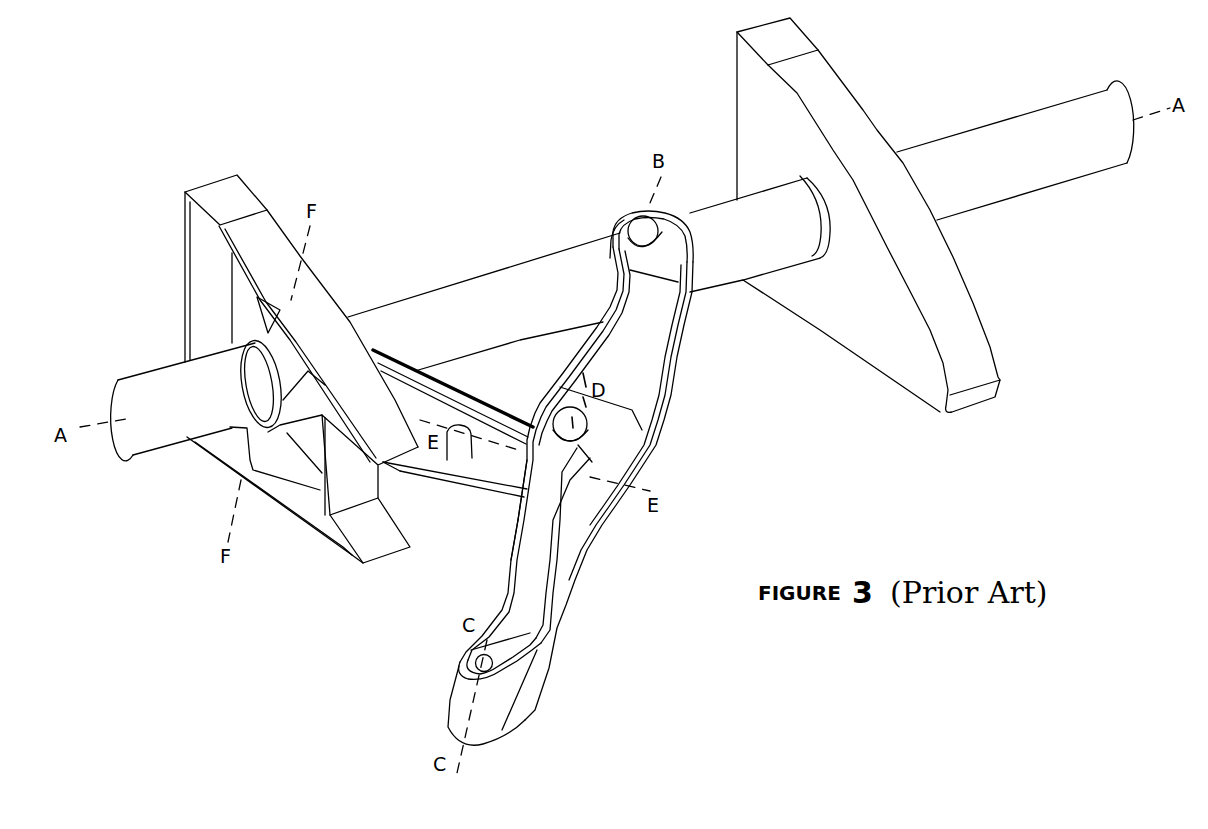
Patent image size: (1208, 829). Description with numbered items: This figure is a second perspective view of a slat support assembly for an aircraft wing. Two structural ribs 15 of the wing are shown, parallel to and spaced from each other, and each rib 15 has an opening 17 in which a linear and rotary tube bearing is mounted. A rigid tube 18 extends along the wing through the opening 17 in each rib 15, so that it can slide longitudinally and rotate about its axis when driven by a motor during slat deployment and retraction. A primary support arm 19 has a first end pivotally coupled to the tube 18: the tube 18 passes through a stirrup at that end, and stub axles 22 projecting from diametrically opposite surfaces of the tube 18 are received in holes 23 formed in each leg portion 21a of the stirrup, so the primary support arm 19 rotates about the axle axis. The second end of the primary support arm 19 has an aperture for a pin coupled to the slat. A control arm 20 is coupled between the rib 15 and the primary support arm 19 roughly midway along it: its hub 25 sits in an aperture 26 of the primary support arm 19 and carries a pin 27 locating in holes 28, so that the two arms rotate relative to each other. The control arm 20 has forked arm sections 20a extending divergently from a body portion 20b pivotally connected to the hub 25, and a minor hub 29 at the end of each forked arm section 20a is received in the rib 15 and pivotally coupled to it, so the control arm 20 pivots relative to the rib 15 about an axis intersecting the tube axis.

The structural rib 15 is at (223, 190).
The opening 17 is at (258, 345).
The rigid tube 18 is at (162, 417).
The primary support arm 19 is at (623, 557).
The control arm 20 is at (436, 489).
The forked arm sections 20a is at (458, 405).
The body portion 20b is at (497, 452).
The leg portion 21a is at (620, 250).
The stub axles 22 is at (640, 222).
The holes 23 is at (645, 248).
The hub 25 is at (520, 480).
The aperture 26 is at (520, 520).
The pin 27 is at (577, 430).
The holes 28 is at (578, 450).
The minor hub 29 is at (280, 333).